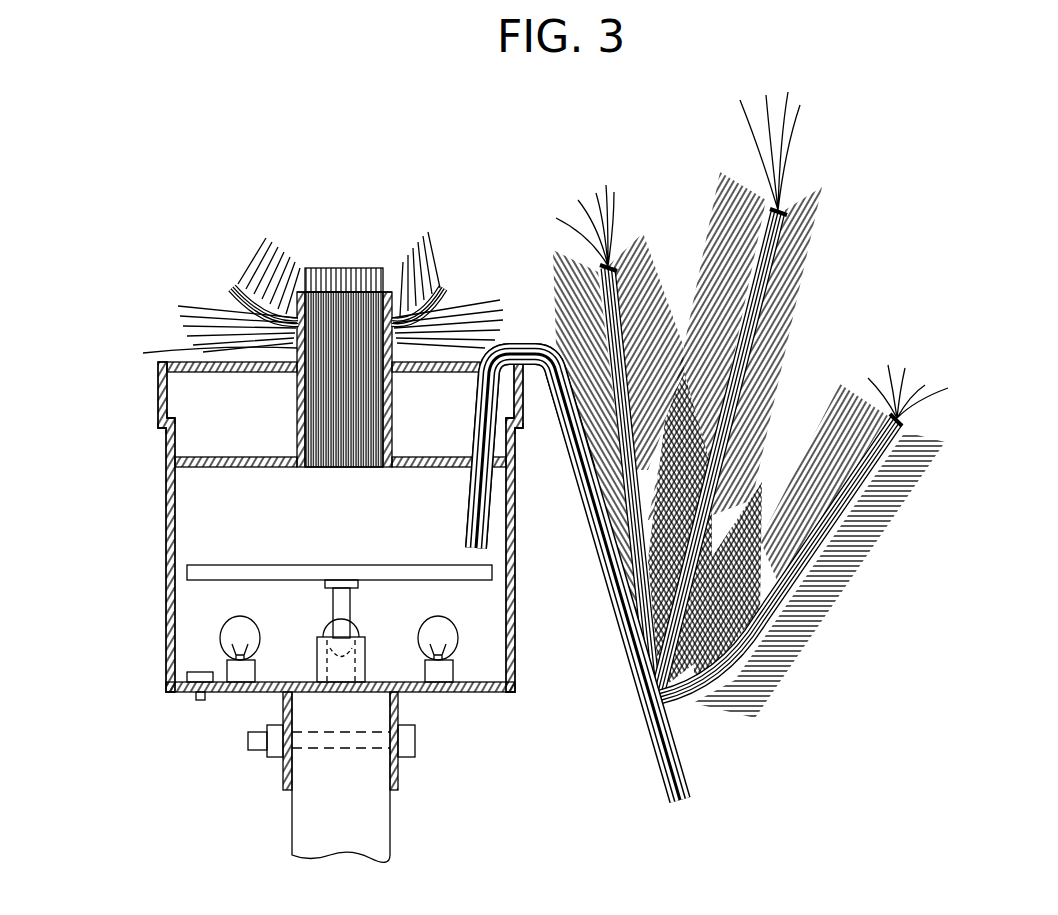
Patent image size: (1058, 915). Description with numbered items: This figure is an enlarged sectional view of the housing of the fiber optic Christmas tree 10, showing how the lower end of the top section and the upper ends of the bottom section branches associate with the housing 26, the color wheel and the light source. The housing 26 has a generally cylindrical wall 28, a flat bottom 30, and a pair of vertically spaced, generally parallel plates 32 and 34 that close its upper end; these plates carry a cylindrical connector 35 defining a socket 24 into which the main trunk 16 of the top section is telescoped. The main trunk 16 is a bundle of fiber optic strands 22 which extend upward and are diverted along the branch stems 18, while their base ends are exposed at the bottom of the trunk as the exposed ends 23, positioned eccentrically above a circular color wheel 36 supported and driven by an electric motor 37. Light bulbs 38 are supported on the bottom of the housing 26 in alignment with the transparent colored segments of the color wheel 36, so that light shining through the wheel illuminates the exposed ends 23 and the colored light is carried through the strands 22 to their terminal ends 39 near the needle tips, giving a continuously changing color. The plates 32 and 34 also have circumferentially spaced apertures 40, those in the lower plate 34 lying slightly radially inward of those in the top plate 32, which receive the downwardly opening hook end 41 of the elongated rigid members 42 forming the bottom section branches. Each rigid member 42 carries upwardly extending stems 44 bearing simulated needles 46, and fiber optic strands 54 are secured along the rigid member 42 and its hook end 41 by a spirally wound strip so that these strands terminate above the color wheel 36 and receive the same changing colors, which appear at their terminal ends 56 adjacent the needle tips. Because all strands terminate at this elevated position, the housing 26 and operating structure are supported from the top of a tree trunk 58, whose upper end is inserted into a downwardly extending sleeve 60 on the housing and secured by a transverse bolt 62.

The tree 10 is at (262, 240).
The main trunk 16 is at (203, 352).
The branch stems 18 is at (232, 280).
The fiber optic strands 22 is at (343, 268).
The exposed ends 23 is at (352, 470).
The socket 24 is at (305, 470).
The housing 26 is at (158, 540).
The cylindrical wall 28 is at (165, 623).
The flat bottom 30 is at (470, 693).
The top plate 32 is at (237, 367).
The lower plate 34 is at (245, 470).
The cylindrical connector 35 is at (198, 693).
The color wheel 36 is at (260, 575).
The electric motor 37 is at (322, 667).
The light bulbs 38 is at (447, 643).
The terminal ends 39 is at (246, 280).
The apertures 40 is at (180, 372).
The hook end 41 is at (465, 478).
The rigid members 42 is at (650, 743).
The stems 44 is at (780, 630).
The simulated needles 46 is at (773, 668).
The fiber optic strands 54 is at (678, 800).
The terminal ends 56 is at (862, 128).
The tree trunk 58 is at (363, 840).
The sleeve 60 is at (403, 773).
The transverse bolt 62 is at (273, 752).